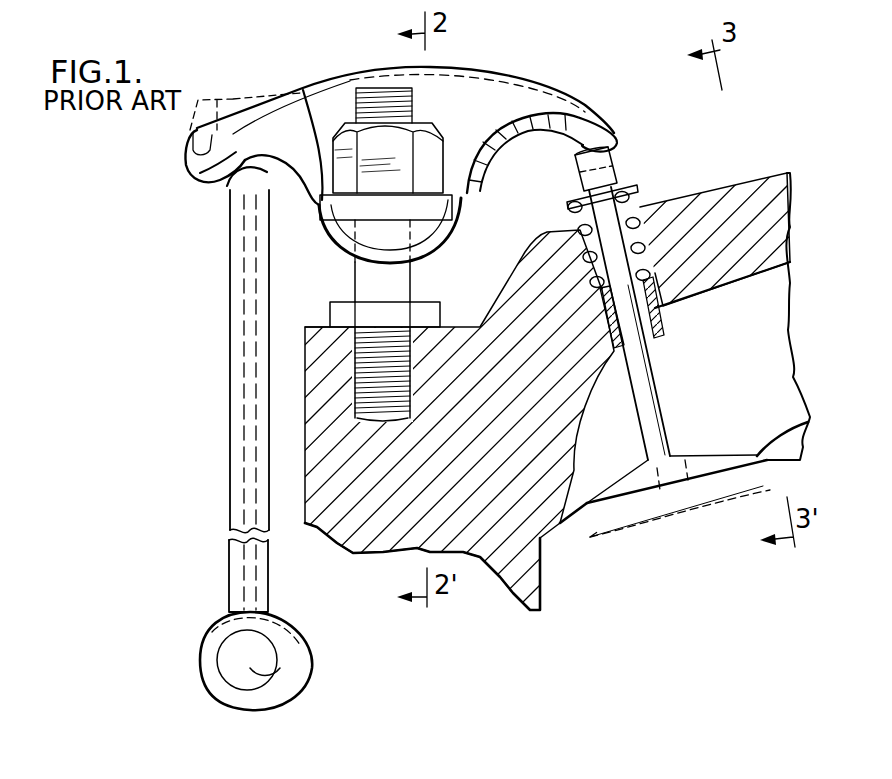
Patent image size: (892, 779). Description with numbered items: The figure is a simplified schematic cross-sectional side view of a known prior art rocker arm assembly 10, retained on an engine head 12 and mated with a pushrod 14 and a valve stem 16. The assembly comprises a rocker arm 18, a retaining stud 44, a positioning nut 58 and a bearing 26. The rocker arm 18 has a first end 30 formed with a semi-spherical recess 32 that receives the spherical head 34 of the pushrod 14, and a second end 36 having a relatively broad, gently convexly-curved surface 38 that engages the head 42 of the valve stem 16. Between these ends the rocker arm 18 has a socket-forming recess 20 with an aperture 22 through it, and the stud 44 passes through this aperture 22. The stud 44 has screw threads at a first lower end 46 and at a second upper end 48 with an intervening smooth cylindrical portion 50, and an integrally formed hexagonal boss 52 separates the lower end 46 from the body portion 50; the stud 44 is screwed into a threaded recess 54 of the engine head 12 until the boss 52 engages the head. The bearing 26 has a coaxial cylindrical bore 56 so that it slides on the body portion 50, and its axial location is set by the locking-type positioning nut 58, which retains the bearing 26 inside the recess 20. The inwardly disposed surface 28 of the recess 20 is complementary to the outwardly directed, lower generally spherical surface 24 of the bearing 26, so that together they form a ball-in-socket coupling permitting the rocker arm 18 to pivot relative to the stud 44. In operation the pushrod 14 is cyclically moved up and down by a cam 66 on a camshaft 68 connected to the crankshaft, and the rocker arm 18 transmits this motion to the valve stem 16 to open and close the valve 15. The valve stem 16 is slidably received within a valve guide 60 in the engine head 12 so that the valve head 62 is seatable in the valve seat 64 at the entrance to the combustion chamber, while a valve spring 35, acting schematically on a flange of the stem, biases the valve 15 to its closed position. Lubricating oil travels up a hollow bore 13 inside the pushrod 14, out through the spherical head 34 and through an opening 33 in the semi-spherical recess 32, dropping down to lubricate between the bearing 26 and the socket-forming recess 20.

The rocker arm assembly 10 is at (670, 140).
The engine head 12 is at (543, 537).
The hollow bore 13 is at (243, 448).
The pushrod 14 is at (240, 393).
The valve 15 is at (687, 410).
The valve stem 16 is at (623, 193).
The rocker arm 18 is at (463, 240).
The socket-forming recess 20 is at (330, 237).
The aperture 22 is at (347, 260).
The lower generally spherical surface 24 is at (260, 223).
The bearing 26 is at (463, 140).
The inwardly disposed surface 28 is at (467, 213).
The first end 30 is at (220, 182).
The semi-spherical recess 32 is at (235, 133).
The opening 33 is at (238, 130).
The spherical head 34 is at (243, 197).
The valve spring 35 is at (653, 255).
The second end 36 is at (607, 127).
The gently convexly-curved surface 38 is at (613, 147).
The head 42 is at (590, 133).
The retaining stud 44 is at (392, 283).
The first lower end 46 is at (347, 360).
The second upper end 48 is at (370, 90).
The smooth cylindrical portion 50 is at (434, 302).
The hexagonal boss 52 is at (330, 310).
The threaded recess 54 is at (357, 403).
The coaxial cylindrical bore 56 is at (333, 187).
The positioning nut 58 is at (410, 130).
The valve guide 60 is at (660, 322).
The valve head 62 is at (680, 503).
The valve seat 64 is at (713, 460).
The cam 66 is at (303, 653).
The camshaft 68 is at (250, 670).